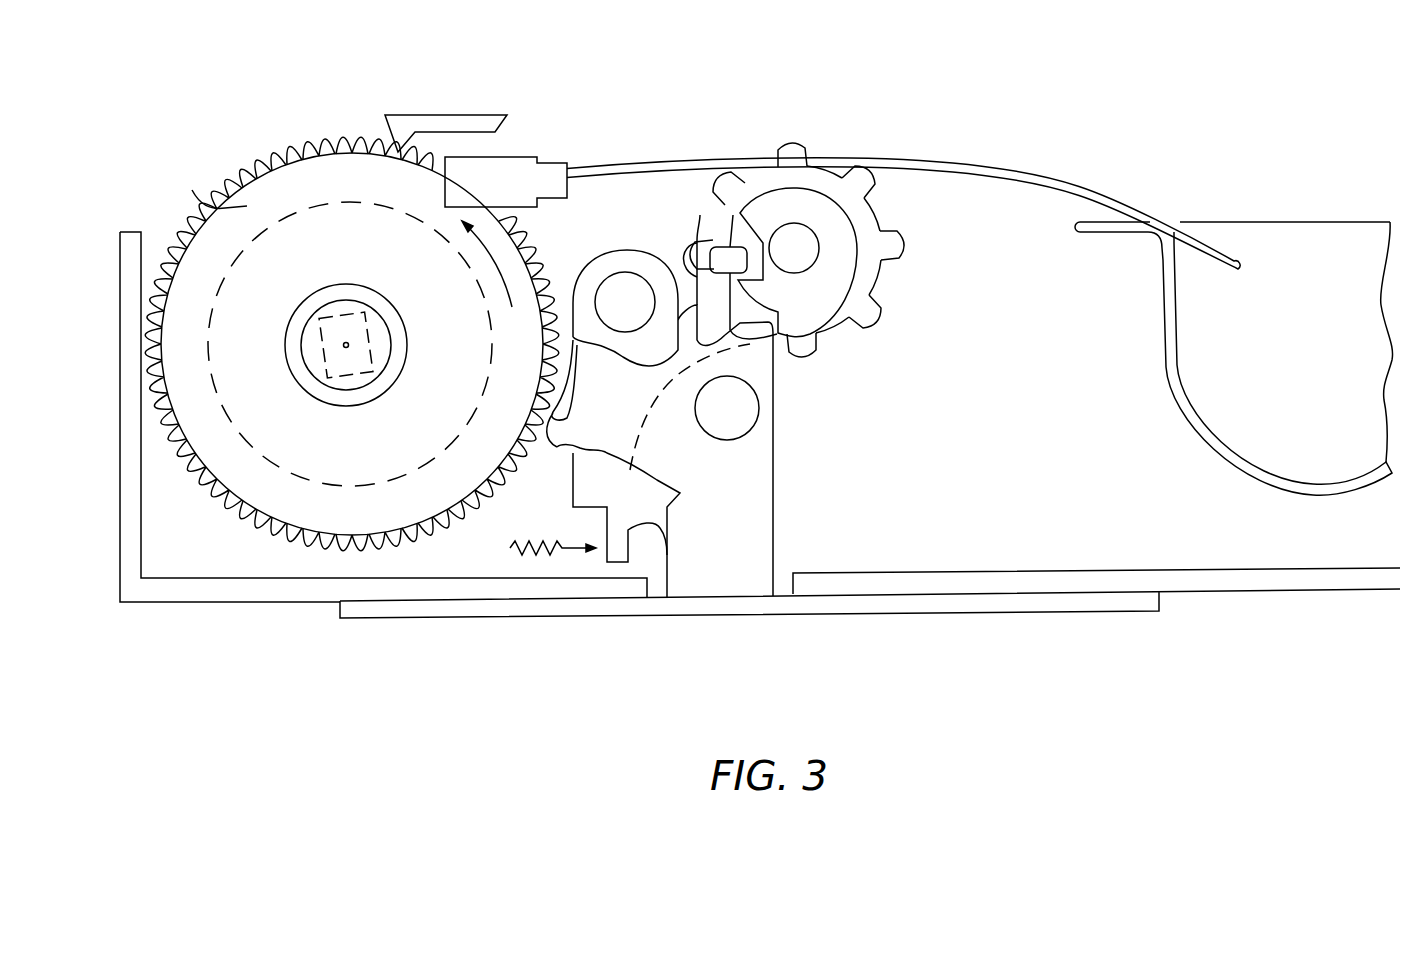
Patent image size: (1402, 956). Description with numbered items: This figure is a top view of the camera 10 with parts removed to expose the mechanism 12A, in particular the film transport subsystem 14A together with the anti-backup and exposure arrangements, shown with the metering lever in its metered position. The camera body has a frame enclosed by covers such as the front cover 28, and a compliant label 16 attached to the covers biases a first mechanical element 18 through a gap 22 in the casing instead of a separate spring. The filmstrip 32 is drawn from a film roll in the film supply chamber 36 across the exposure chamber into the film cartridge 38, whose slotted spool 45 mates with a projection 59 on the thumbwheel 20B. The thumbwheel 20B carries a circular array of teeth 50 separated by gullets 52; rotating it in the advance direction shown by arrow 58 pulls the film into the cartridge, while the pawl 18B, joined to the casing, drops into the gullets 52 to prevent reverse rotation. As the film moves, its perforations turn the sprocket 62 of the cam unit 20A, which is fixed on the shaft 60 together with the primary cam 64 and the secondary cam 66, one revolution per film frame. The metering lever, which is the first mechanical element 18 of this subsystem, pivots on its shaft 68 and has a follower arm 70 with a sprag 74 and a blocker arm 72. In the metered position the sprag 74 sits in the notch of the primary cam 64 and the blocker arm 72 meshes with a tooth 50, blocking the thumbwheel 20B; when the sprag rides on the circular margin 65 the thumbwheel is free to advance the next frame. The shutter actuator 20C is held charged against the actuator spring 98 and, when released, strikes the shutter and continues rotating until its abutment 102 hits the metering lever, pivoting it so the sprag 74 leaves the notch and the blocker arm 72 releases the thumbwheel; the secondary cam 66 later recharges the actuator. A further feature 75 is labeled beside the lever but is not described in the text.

The camera 10 is at (559, 629).
The feed direction 12A is at (662, 632).
The film transport subsystem 14A is at (846, 377).
The compliant label 16 is at (1133, 613).
The first mechanical element 18 is at (697, 459).
The pawl 18B is at (465, 113).
The cam unit 20A is at (838, 171).
The thumbwheel 20B is at (210, 200).
The shutter actuator 20C is at (659, 530).
The gap 22 is at (784, 592).
The front cover 28 is at (228, 605).
The filmstrip 32 is at (656, 160).
The film supply chamber 36 is at (1187, 427).
The film cartridge 38 is at (548, 158).
The spool 45 is at (343, 198).
The teeth 50 is at (352, 320).
The gullets 52 is at (335, 150).
The arrow 58 is at (476, 258).
The projection 59 is at (322, 372).
The shaft 60 is at (790, 258).
The sprocket 62 is at (831, 226).
The primary cam 64 is at (638, 315).
The circular margin 65 is at (772, 190).
The secondary cam 66 is at (838, 318).
The shaft 68 is at (758, 420).
The follower arm 70 is at (665, 263).
The blocker arm 72 is at (545, 383).
The sprag 74 is at (720, 249).
The body edge 75 is at (776, 525).
The actuator spring 98 is at (510, 548).
The abutment 102 is at (572, 462).